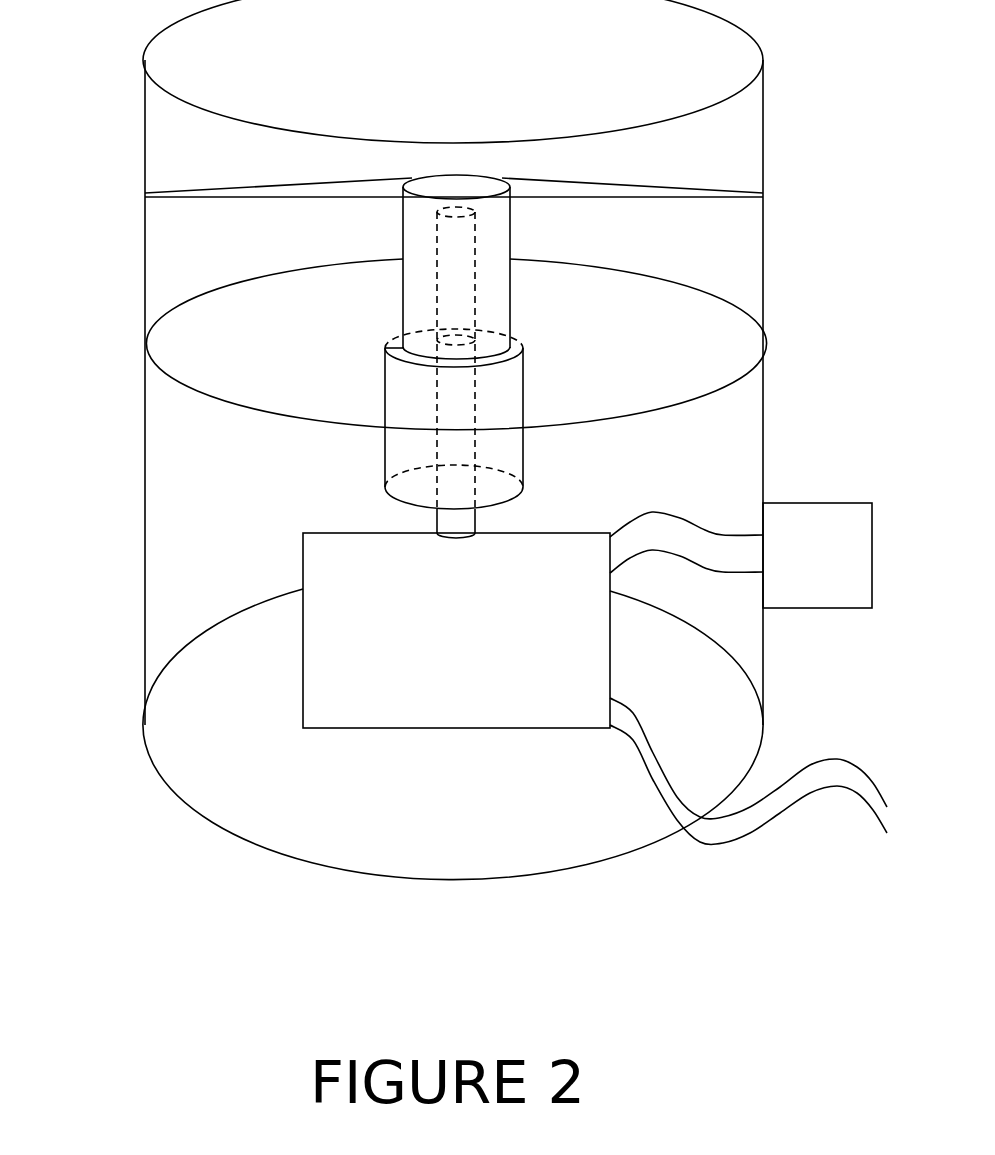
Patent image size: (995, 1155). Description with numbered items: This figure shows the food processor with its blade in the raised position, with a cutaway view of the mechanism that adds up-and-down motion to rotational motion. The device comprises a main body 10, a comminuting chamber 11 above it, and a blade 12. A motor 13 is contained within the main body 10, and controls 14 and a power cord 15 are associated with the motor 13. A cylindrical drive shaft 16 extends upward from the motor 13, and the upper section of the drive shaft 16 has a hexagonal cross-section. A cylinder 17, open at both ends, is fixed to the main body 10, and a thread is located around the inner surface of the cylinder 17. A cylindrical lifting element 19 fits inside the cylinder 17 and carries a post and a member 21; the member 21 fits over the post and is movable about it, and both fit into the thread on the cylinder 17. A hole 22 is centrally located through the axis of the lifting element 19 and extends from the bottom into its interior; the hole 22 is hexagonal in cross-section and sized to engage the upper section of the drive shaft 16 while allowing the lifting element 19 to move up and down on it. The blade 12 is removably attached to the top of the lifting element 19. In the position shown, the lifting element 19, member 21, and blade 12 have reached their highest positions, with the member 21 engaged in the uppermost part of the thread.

The main body 10 is at (138, 558).
The comminuting chamber 11 is at (167, 143).
The blade 12 is at (198, 203).
The motor 13 is at (430, 735).
The controls 14 is at (840, 500).
The power cord 15 is at (803, 813).
The drive shaft 16 is at (478, 517).
The cylinder 17 is at (530, 379).
The lifting element 19 is at (395, 293).
The member 21 is at (383, 350).
The hole 22 is at (465, 240).